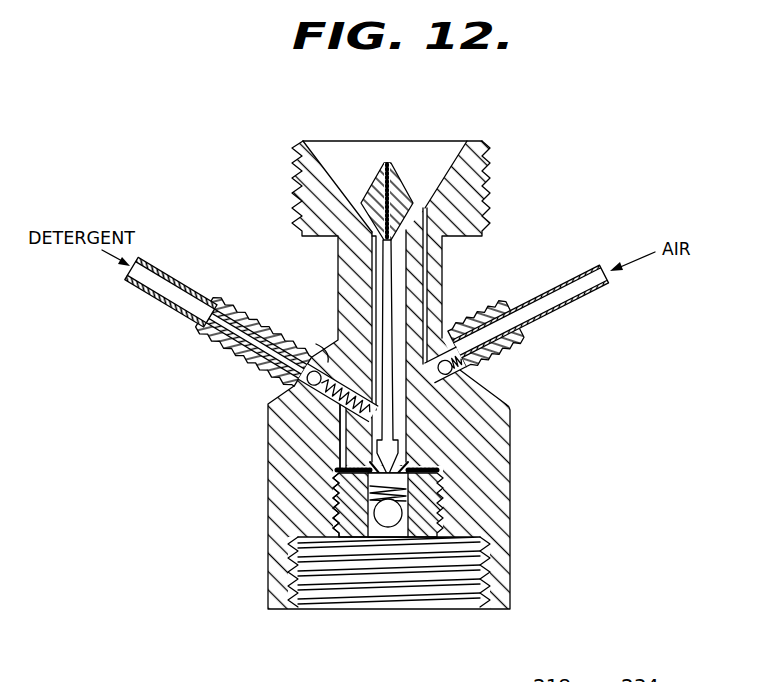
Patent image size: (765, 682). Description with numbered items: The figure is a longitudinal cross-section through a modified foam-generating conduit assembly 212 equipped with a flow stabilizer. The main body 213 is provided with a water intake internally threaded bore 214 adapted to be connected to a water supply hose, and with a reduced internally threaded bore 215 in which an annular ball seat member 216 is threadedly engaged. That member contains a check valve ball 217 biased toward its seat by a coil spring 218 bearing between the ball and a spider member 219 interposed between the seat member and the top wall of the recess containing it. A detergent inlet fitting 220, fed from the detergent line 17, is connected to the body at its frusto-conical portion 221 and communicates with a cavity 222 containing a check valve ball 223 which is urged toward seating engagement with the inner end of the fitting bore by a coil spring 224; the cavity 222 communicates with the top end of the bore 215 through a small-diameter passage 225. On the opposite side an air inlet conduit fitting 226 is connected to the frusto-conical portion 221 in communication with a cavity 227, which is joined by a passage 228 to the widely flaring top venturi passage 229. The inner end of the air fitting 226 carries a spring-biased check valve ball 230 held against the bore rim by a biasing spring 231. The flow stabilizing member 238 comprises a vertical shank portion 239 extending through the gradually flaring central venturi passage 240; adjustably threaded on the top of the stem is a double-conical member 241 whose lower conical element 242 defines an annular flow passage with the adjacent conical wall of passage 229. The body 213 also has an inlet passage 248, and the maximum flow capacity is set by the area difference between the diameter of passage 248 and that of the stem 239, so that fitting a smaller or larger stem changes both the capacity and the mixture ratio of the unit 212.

The detergent supply line 17 is at (160, 270).
The foam-generating conduit assembly 212 is at (538, 496).
The main body 213 is at (511, 424).
The water intake internally threaded bore 214 is at (453, 608).
The reduced internally threaded bore 215 is at (446, 502).
The annular ball seat member 216 is at (336, 501).
The check valve ball 217 is at (388, 527).
The coil spring 218 is at (405, 458).
The spider member 219 is at (441, 473).
The detergent inlet fitting 220 is at (271, 332).
The frusto-conical portion 221 is at (337, 322).
The cavity 222 is at (323, 348).
The check valve ball 223 is at (306, 382).
The coil spring 224 is at (333, 402).
The small-diameter passage 225 is at (343, 430).
The air inlet conduit fitting 226 is at (531, 299).
The cavity 227 is at (448, 340).
The passage 228 is at (436, 262).
The widely flaring top venturi passage 229 is at (438, 162).
The spring-biased check valve ball 230 is at (453, 368).
The biasing spring 231 is at (487, 361).
The flow stabilizing member 238 is at (390, 163).
The vertical shank portion 239 is at (389, 297).
The gradually flaring central venturi passage 240 is at (371, 247).
The double-conical member 241 is at (369, 189).
The lower conical element 242 is at (367, 219).
The inlet passage 248 is at (347, 426).